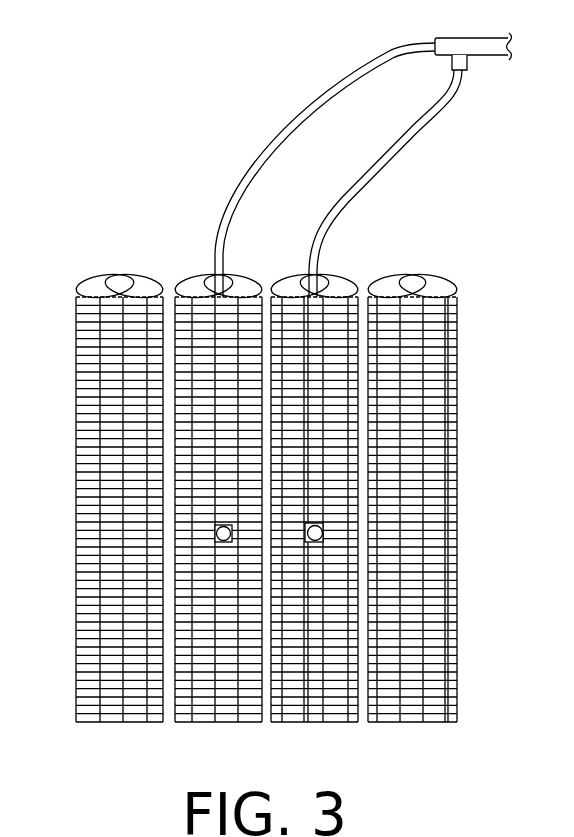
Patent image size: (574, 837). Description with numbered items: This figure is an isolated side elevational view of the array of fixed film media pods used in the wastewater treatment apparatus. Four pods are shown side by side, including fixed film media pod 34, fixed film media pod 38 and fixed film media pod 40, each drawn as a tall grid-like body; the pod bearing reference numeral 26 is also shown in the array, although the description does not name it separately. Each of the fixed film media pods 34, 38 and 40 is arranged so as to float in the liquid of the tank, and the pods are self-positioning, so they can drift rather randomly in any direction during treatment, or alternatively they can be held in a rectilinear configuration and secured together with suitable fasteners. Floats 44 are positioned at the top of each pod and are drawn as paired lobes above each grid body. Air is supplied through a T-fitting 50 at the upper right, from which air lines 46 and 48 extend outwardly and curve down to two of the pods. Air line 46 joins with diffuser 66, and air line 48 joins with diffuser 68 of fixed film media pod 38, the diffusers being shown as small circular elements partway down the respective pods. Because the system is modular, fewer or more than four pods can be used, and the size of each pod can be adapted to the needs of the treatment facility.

The second panel 26 is at (195, 723).
The fixed film media pod 34 is at (95, 668).
The fixed film media pod 38 is at (315, 707).
The fixed film media pod 40 is at (452, 607).
The float 44 is at (102, 274).
The air line 46 is at (290, 143).
The air line 48 is at (388, 167).
The T-fitting 50 is at (478, 47).
The diffuser 66 is at (215, 532).
The diffuser 68 is at (323, 527).